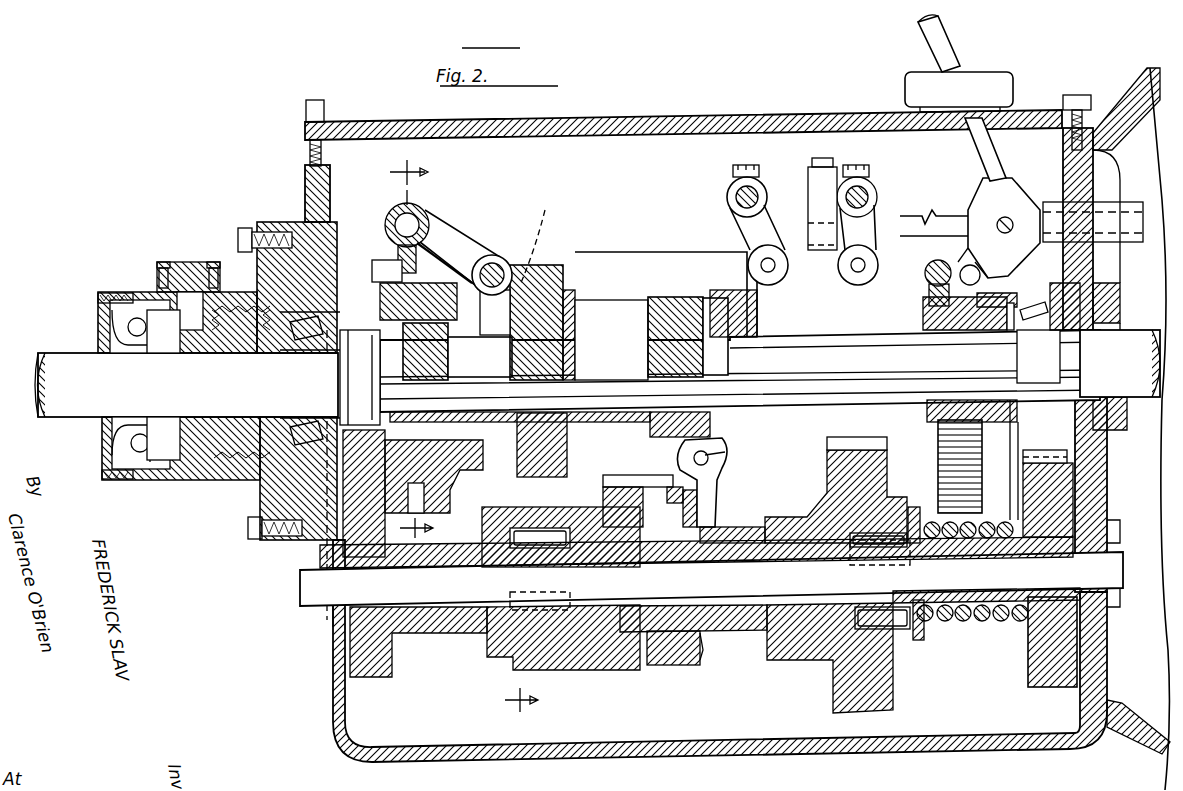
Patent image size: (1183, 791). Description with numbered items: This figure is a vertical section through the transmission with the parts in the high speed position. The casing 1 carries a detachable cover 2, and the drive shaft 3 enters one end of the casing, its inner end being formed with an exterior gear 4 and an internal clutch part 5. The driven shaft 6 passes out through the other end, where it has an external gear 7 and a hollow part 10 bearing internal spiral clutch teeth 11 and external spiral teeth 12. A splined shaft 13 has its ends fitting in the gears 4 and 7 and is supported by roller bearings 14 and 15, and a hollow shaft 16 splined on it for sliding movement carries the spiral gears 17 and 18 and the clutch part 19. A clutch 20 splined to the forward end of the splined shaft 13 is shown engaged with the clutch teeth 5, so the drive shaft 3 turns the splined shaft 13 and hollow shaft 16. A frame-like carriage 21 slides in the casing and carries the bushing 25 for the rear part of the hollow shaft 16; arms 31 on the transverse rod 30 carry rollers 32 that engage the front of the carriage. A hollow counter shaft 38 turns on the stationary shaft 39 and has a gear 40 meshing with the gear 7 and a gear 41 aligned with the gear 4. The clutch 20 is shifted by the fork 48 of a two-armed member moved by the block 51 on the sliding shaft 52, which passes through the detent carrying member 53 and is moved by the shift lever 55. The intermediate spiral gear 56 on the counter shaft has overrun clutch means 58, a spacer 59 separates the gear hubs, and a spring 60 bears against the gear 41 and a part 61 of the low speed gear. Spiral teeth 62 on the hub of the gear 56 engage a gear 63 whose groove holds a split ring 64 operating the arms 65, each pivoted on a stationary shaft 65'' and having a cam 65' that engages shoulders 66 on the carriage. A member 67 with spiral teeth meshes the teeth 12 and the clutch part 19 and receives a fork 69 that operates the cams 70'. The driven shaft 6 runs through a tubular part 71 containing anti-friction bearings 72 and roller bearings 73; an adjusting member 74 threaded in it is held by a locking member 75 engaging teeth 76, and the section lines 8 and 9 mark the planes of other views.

The casing 1 is at (440, 745).
The detachable cover 2 is at (626, 122).
The drive shaft 3 is at (1128, 378).
The exterior gear 4 is at (1050, 287).
The internal clutch part 5 is at (995, 425).
The driven shaft 6 is at (76, 402).
The external gear 7 is at (350, 268).
The section line 8 is at (405, 345).
The countershaft 9 is at (711, 641).
The hollow part 10 is at (466, 250).
The internal spiral clutch teeth 11 is at (444, 263).
The external spiral teeth 12 is at (418, 278).
The splined shaft 13 is at (740, 371).
The roller bearing 14 is at (1024, 300).
The roller bearing 15 is at (370, 412).
The hollow shaft 16 is at (624, 338).
The spiral gear 17 is at (658, 296).
The spiral gear 18 is at (565, 290).
The clutch part 19 is at (450, 352).
The clutch 20 is at (925, 318).
The frame-like carriage 21 is at (615, 252).
The bushing 25 is at (521, 313).
The transverse rod 30 is at (758, 190).
The arm 31 is at (750, 234).
The roller 32 is at (845, 278).
The counter shaft 38 is at (742, 620).
The stationary shaft 39 is at (448, 593).
The gear 40 is at (375, 645).
The gear 41 is at (1035, 650).
The fork 48 is at (929, 292).
The block 51 is at (1015, 192).
The sliding shaft 52 is at (945, 214).
The detent carrying member 53 is at (812, 182).
The shift lever 55 is at (950, 43).
The intermediate spiral gear 56 is at (588, 640).
The overrun clutch means 58 is at (540, 532).
The spacer 59 is at (742, 527).
The spring 60 is at (963, 622).
The part of the gear 61 is at (922, 640).
The spiral teeth 62 is at (710, 640).
The gear 63 is at (655, 668).
The split ring 64 is at (670, 475).
The arm 65 is at (733, 482).
The cam 65' is at (752, 449).
The stationary shaft 65'' is at (764, 433).
The shoulder 66 is at (558, 445).
The member 67 is at (386, 258).
The fork 69 is at (395, 213).
The cam 70' is at (543, 238).
The tubular part 71 is at (192, 480).
The anti-friction bearings 72 is at (130, 328).
The roller bearings 73 is at (300, 318).
The adjusting member 74 is at (232, 445).
The locking member 75 is at (183, 262).
The teeth 76 is at (185, 445).